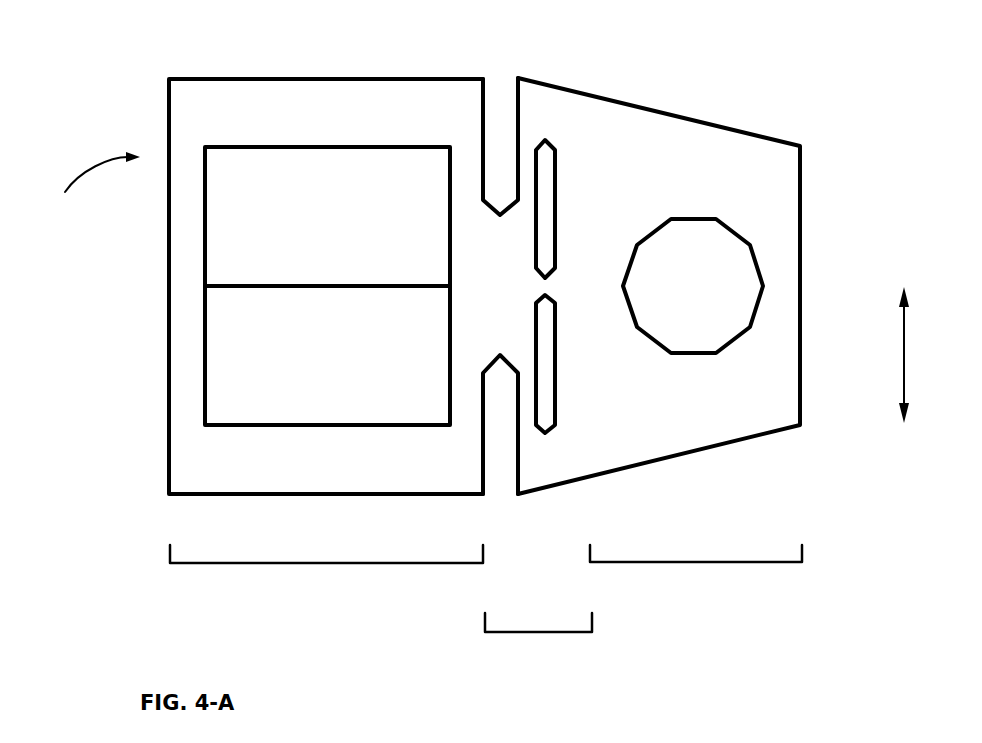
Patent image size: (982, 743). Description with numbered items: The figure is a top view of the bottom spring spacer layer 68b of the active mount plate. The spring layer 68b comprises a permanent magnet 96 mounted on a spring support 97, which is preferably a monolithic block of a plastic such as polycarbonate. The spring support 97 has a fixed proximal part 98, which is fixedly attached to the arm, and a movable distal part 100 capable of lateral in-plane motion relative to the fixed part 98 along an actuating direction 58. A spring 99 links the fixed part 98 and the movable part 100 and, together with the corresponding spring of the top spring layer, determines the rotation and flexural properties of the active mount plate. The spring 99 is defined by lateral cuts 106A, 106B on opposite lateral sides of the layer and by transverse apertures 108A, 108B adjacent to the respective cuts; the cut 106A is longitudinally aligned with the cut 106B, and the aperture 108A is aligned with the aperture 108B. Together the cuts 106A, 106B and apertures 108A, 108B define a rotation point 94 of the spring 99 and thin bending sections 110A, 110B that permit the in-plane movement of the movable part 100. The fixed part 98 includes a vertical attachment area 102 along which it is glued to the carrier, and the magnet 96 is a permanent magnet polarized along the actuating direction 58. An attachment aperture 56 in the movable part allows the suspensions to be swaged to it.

The attachment aperture 56 is at (763, 286).
The actuating direction 58 is at (904, 355).
The bottom spring spacer layer 68b is at (88, 187).
The rotation point 94 is at (545, 287).
The permanent magnet 96 is at (205, 365).
The spring support 97 is at (197, 458).
The fixed proximal part 98 is at (330, 563).
The spring 99 is at (538, 632).
The movable distal part 100 is at (693, 562).
The vertical attachment area 102 is at (293, 128).
The lateral cut 106A is at (500, 105).
The lateral cut 106B is at (502, 487).
The transverse aperture 108A is at (545, 140).
The transverse aperture 108B is at (557, 365).
The thin bending section 110A is at (527, 182).
The thin bending section 110B is at (528, 398).